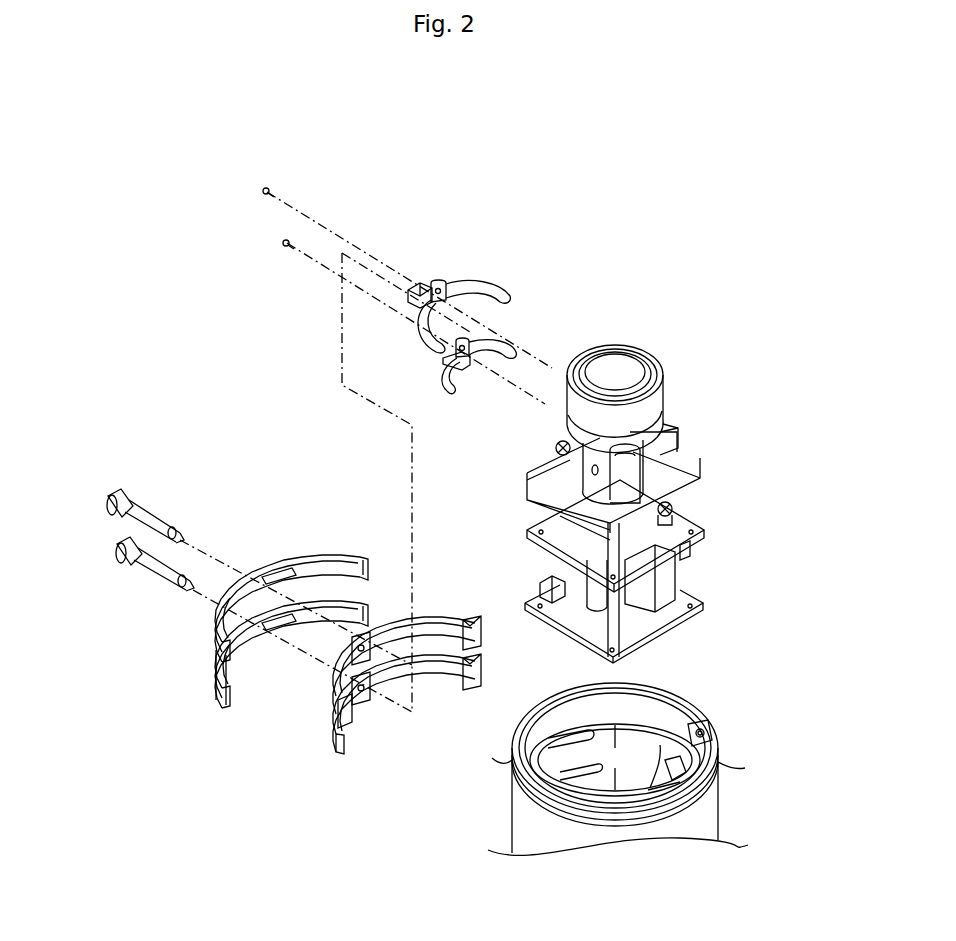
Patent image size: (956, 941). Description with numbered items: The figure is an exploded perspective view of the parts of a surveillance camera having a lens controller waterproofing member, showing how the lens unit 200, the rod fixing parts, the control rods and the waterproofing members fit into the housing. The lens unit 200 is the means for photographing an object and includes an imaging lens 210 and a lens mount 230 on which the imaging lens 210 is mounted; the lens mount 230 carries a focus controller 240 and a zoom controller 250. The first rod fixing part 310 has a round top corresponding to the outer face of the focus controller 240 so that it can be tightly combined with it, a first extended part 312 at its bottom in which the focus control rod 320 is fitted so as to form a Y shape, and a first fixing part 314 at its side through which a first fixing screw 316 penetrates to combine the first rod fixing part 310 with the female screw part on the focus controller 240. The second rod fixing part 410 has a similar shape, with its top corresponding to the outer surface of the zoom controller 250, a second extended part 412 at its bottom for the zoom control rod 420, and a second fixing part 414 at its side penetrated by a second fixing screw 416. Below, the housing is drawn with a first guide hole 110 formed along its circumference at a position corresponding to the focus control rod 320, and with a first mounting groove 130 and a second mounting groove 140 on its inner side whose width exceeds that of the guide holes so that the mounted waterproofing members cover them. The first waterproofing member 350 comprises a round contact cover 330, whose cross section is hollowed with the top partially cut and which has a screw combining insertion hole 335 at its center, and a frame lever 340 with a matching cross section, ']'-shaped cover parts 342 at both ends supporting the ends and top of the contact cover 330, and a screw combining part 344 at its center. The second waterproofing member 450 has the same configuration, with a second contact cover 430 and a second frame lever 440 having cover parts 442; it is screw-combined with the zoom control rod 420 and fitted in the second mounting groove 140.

The first guide hole 110 is at (613, 750).
The first mounting groove 130 is at (664, 720).
The second mounting groove 140 is at (708, 757).
The lens unit 200 is at (662, 497).
The imaging lens 210 is at (681, 363).
The lens mount 230 is at (555, 495).
The focus controller 240 is at (678, 400).
The zoom controller 250 is at (597, 547).
The first rod fixing part 310 is at (469, 264).
The first extended part 312 is at (405, 241).
The first fixing part 314 is at (453, 238).
The first fixing screw 316 is at (240, 138).
The focus control rod 320 is at (133, 487).
The first contact cover 330 is at (291, 595).
The screw combining insertion hole 335 is at (267, 559).
The first frame lever 340 is at (401, 673).
The cover part 342 is at (507, 656).
The screw combining part 344 is at (314, 668).
The first waterproofing member 350 is at (383, 655).
The second rod fixing part 410 is at (441, 425).
The second extended part 412 is at (414, 371).
The second fixing part 414 is at (490, 396).
The second fixing screw 416 is at (239, 235).
The zoom control rod 420 is at (112, 564).
The second contact cover 430 is at (205, 739).
The second frame lever 440 is at (298, 781).
The cover part 442 is at (365, 779).
The second waterproofing member 450 is at (236, 757).